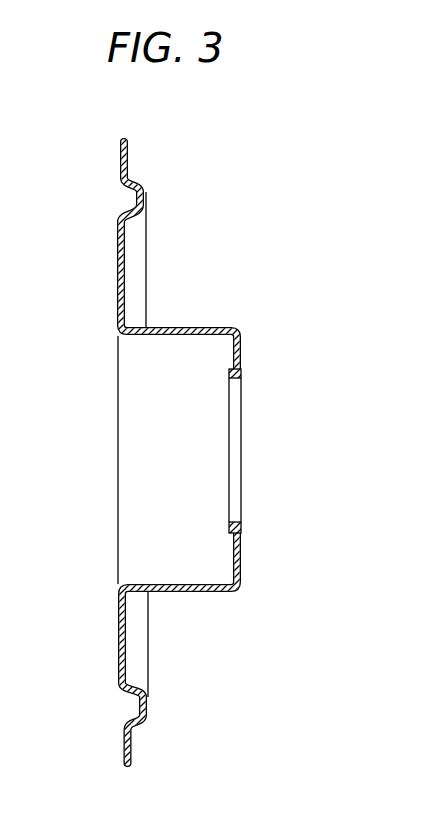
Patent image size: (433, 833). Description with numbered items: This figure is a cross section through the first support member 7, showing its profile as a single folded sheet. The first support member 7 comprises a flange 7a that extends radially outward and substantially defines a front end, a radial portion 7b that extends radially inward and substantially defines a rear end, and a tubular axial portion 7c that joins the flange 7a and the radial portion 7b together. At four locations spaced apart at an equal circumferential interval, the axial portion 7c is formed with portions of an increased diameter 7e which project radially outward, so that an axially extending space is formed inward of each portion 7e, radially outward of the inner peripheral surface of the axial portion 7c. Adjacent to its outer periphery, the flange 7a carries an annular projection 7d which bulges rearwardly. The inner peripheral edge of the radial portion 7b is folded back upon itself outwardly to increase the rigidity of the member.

The first support member 7 is at (211, 452).
The flange 7a is at (117, 268).
The radial portion 7b is at (235, 357).
The tubular axial portion 7c is at (193, 328).
The annular projection 7d is at (144, 196).
The portions of an increased diameter 7e is at (183, 592).